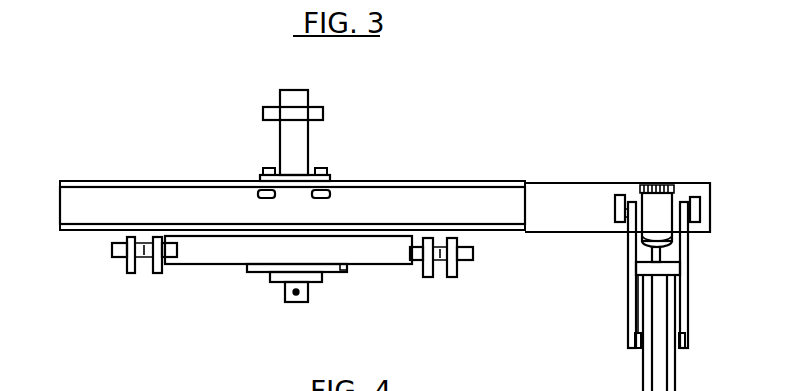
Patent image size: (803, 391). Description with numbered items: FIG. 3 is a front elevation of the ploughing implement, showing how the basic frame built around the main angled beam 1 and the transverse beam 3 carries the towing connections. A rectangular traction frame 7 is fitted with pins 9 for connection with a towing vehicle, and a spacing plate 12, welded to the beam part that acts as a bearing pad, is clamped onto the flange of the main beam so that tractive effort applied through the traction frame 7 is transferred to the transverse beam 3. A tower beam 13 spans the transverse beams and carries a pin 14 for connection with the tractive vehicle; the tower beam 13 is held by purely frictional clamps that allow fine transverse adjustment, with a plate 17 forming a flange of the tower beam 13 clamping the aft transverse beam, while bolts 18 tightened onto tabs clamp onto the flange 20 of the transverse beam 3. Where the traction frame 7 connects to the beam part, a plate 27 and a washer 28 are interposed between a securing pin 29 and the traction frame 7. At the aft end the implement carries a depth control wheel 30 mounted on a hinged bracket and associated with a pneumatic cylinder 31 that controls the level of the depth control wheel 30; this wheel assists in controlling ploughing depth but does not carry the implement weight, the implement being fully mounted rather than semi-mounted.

The main angled beam 1 is at (540, 224).
The transverse beam 3 is at (497, 232).
The traction frame 7 is at (200, 250).
The pins 9 is at (141, 260).
The spacing plate 12 is at (180, 231).
The tower beam 13 is at (292, 103).
The pin 14 is at (315, 112).
The plate 17 is at (288, 177).
The bolts 18 is at (264, 169).
The flange 20 is at (66, 181).
The plate 27 is at (344, 271).
The washer 28 is at (313, 281).
The securing pin 29 is at (293, 302).
The depth control wheel 30 is at (668, 378).
The pneumatic cylinder 31 is at (662, 208).